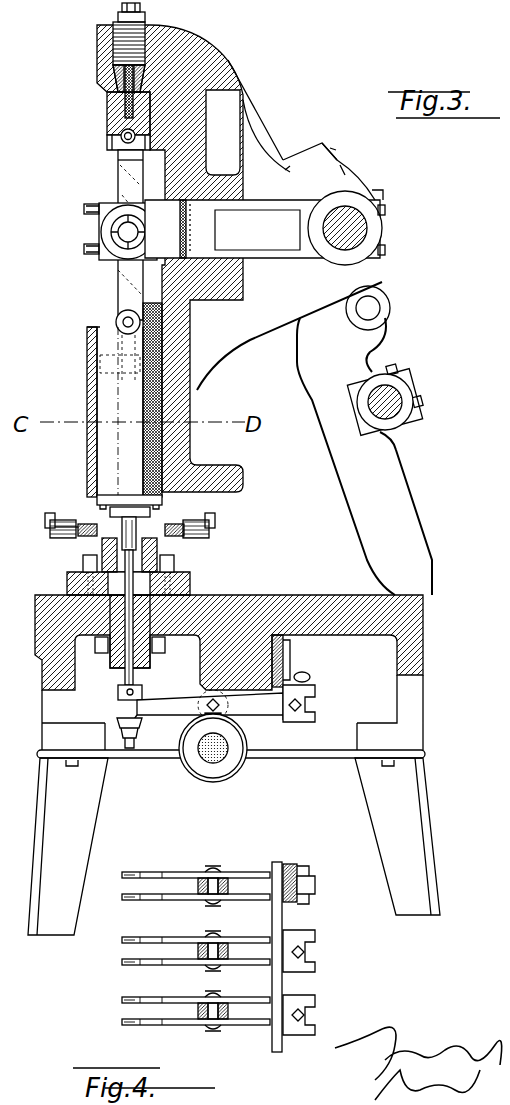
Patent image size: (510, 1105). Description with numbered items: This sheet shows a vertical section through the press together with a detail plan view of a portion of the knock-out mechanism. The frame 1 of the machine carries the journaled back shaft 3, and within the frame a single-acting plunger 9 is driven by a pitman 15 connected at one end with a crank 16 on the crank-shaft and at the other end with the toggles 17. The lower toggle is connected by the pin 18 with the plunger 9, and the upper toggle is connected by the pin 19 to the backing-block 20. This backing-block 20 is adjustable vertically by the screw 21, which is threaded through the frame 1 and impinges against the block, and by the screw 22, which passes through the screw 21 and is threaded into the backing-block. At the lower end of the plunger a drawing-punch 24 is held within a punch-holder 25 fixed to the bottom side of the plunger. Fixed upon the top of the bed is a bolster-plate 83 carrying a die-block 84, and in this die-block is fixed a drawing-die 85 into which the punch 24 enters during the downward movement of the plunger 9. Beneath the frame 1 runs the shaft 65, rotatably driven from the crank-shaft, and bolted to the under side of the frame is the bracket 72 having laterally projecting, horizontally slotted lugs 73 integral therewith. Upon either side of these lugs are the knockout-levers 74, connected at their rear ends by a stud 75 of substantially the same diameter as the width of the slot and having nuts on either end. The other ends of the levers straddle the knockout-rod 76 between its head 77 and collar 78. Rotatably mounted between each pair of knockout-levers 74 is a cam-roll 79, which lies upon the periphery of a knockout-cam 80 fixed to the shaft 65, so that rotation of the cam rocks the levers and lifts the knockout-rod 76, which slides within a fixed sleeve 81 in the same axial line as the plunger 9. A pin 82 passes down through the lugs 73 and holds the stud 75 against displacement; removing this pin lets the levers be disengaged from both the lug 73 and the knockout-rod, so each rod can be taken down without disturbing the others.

In FIG. 3, the frame 1 is at (229, 67).
In FIG. 3, the back shaft 3 is at (400, 396).
In FIG. 3, the plunger 9 is at (97, 395).
In FIG. 3, the pitman 15 is at (338, 182).
In FIG. 3, the crank 16 is at (367, 228).
In FIG. 3, the toggles 17 is at (118, 178).
In FIG. 3, the pin 18 is at (116, 321).
In FIG. 3, the pin 19 is at (120, 136).
In FIG. 3, the backing-block 20 is at (107, 103).
In FIG. 3, the screw 21 is at (118, 22).
In FIG. 3, the screw 22 is at (113, 75).
In FIG. 3, the drawing-punch 24 is at (120, 522).
In FIG. 3, the punch-holder 25 is at (97, 500).
In FIG. 3, the shaft 65 is at (228, 752).
In FIG. 3, the bracket 72 is at (287, 680).
In FIG. 3, the lugs 73 is at (316, 699).
In FIG. 4, the lugs 73 is at (311, 892).
In FIG. 4, the knockout-levers 74 is at (247, 876).
In FIG. 4, the stud 75 is at (300, 879).
In FIG. 3, the knockout-rod 76 is at (125, 676).
In FIG. 3, the head 77 is at (140, 730).
In FIG. 3, the collar 78 is at (143, 691).
In FIG. 4, the cam-roll 79 is at (206, 941).
In FIG. 3, the knockout-cam 80 is at (222, 782).
In FIG. 3, the fixed sleeve 81 is at (150, 656).
In FIG. 3, the pin 82 is at (311, 677).
In FIG. 3, the bolster-plate 83 is at (67, 578).
In FIG. 3, the die-block 84 is at (190, 495).
In FIG. 3, the drawing-die 85 is at (90, 546).